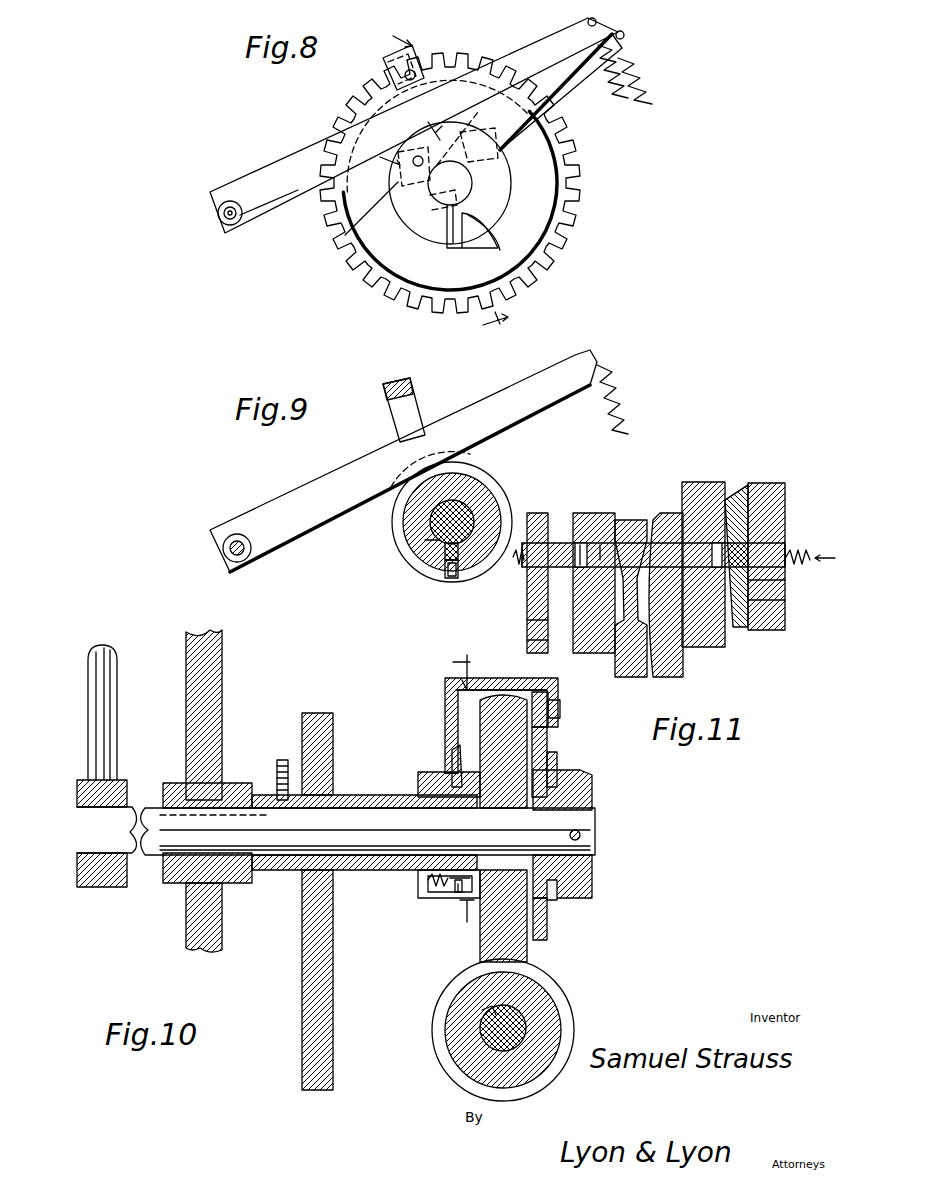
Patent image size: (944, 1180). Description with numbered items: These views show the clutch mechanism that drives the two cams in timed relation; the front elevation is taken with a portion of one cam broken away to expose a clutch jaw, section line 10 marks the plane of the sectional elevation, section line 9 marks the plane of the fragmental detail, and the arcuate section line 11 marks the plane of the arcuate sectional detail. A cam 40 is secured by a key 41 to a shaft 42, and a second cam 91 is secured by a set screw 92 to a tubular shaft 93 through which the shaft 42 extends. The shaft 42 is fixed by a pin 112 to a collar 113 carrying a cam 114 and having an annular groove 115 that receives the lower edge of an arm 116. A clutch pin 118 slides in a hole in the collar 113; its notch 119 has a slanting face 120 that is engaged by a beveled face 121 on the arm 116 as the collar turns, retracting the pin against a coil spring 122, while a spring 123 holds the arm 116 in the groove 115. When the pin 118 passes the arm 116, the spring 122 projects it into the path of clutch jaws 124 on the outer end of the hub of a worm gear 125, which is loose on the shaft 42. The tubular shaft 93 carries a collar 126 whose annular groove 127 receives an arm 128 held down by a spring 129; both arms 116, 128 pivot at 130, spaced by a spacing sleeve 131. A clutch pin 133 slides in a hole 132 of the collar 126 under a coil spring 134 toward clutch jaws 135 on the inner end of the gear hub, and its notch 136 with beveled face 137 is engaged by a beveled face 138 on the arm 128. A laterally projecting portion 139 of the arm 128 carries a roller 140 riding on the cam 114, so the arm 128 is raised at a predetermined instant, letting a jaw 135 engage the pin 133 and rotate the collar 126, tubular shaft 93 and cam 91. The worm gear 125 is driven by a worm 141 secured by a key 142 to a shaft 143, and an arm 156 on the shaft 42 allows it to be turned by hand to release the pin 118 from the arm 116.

In FIG. 10, the section line 9— 9 is at (466, 788).
In FIG. 8, the section line 10— 10 is at (440, 182).
In FIG. 8, the arcuate section line 11— 11 is at (401, 136).
In FIG. 10, the cam 40 is at (223, 662).
In FIG. 10, the key 41 is at (172, 800).
In FIG. 8, the shaft 42 is at (450, 183).
In FIG. 9, the shaft 42 is at (472, 500).
In FIG. 11, the shaft 42 is at (548, 500).
In FIG. 10, the shaft 42 is at (112, 818).
In FIG. 10, the second cam 91 is at (328, 1000).
In FIG. 10, the set screw 92 is at (281, 760).
In FIG. 10, the tubular shaft 93 is at (352, 800).
In FIG. 10, the pin 112 is at (598, 835).
In FIG. 8, the collar 113 is at (450, 186).
In FIG. 11, the collar 113 is at (765, 627).
In FIG. 10, the collar 113 is at (595, 884).
In FIG. 8, the cam 114 is at (350, 232).
In FIG. 10, the cam 114 is at (550, 745).
In FIG. 11, the annular groove 115 is at (780, 622).
In FIG. 10, the annular groove 115 is at (556, 888).
In FIG. 8, the arm 116 is at (286, 215).
In FIG. 11, the arm 116 is at (738, 505).
In FIG. 10, the arm 116 is at (560, 762).
In FIG. 8, the clutch pin 118 is at (452, 140).
In FIG. 11, the clutch pin 118 is at (790, 540).
In FIG. 11, the notch 119 is at (712, 540).
In FIG. 11, the beveled face 120 is at (745, 520).
In FIG. 11, the beveled face 121 is at (772, 585).
In FIG. 11, the coil spring 122 is at (804, 550).
In FIG. 8, the spring 123 is at (658, 72).
In FIG. 8, the clutch jaws 124 is at (496, 152).
In FIG. 11, the clutch jaws 124 is at (672, 605).
In FIG. 10, the clutch jaws 124 is at (595, 798).
In FIG. 8, the worm gear 125 is at (585, 185).
In FIG. 11, the worm gear 125 is at (640, 525).
In FIG. 10, the worm gear 125 is at (503, 700).
In FIG. 9, the collar 126 is at (412, 530).
In FIG. 11, the collar 126 is at (527, 642).
In FIG. 10, the collar 126 is at (455, 895).
In FIG. 8, the annular groove 127 is at (561, 92).
In FIG. 9, the annular groove 127 is at (406, 561).
In FIG. 11, the annular groove 127 is at (540, 626).
In FIG. 10, the annular groove 127 is at (442, 765).
In FIG. 8, the arm 128 is at (306, 150).
In FIG. 9, the arm 128 is at (292, 492).
In FIG. 11, the arm 128 is at (550, 513).
In FIG. 10, the arm 128 is at (457, 760).
In FIG. 8, the spring 129 is at (620, 96).
In FIG. 9, the spring 129 is at (630, 397).
In FIG. 8, the pivot 130 is at (226, 228).
In FIG. 9, the pivot 130 is at (228, 558).
In FIG. 9, the spacing sleeve 131 is at (233, 536).
In FIG. 9, the longitudinally extending hole 132 is at (442, 582).
In FIG. 11, the longitudinally extending hole 132 is at (603, 540).
In FIG. 10, the longitudinally extending hole 132 is at (441, 893).
In FIG. 11, the clutch pin 133 is at (523, 572).
In FIG. 10, the clutch pin 133 is at (460, 897).
In FIG. 9, the coil spring 134 is at (441, 568).
In FIG. 11, the coil spring 134 is at (520, 562).
In FIG. 10, the coil spring 134 is at (428, 882).
In FIG. 10, the clutch jaws 135 is at (442, 790).
In FIG. 9, the notch 136 is at (453, 582).
In FIG. 11, the notch 136 is at (592, 545).
In FIG. 10, the notch 136 is at (466, 896).
In FIG. 11, the beveled face 137 is at (582, 540).
In FIG. 10, the beveled face 137 is at (548, 922).
In FIG. 9, the beveled face 138 is at (412, 478).
In FIG. 10, the beveled face 138 is at (545, 698).
In FIG. 8, the laterally projecting portion 139 is at (388, 58).
In FIG. 9, the laterally projecting portion 139 is at (412, 390).
In FIG. 10, the laterally projecting portion 139 is at (445, 686).
In FIG. 8, the roller 140 is at (410, 58).
In FIG. 10, the roller 140 is at (546, 706).
In FIG. 10, the worm 141 is at (545, 990).
In FIG. 10, the key 142 is at (455, 1000).
In FIG. 10, the shaft 143 is at (482, 1018).
In FIG. 10, the arm 156 is at (105, 672).